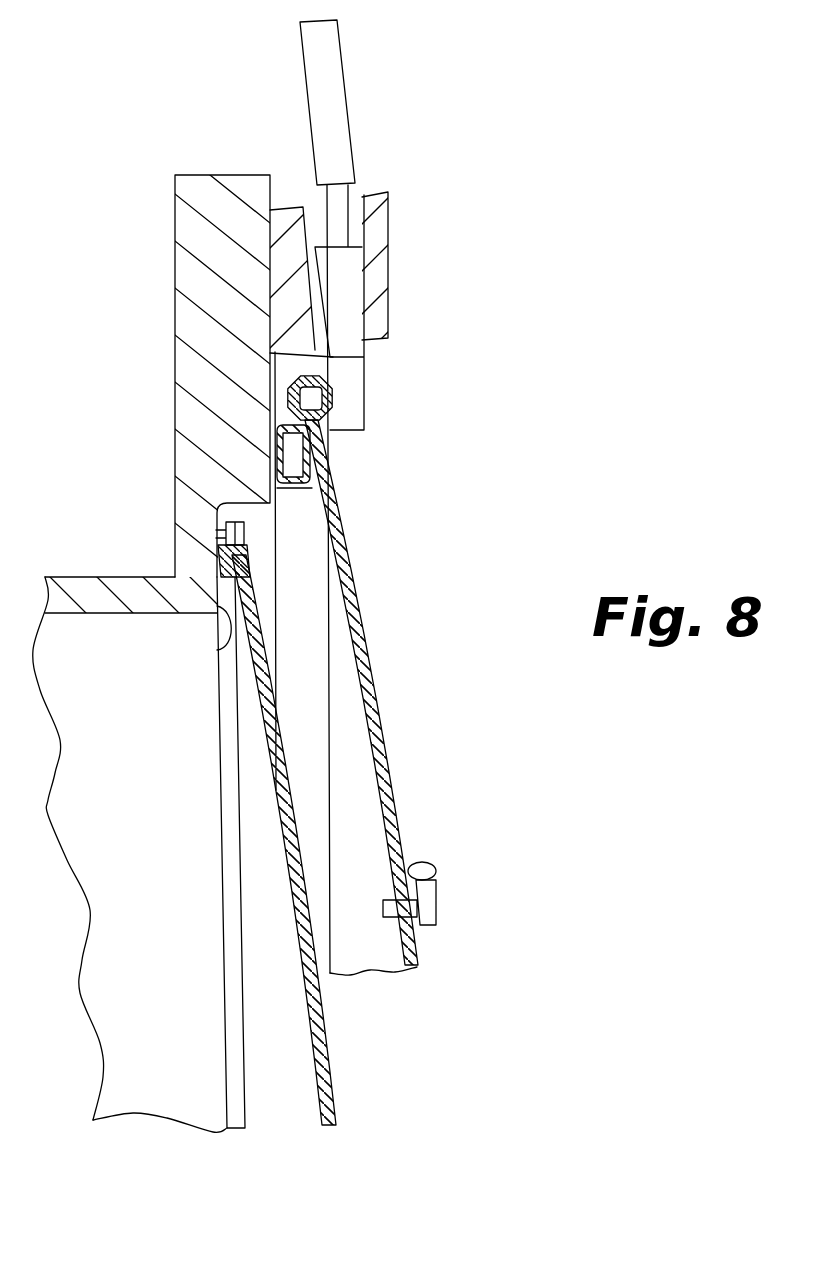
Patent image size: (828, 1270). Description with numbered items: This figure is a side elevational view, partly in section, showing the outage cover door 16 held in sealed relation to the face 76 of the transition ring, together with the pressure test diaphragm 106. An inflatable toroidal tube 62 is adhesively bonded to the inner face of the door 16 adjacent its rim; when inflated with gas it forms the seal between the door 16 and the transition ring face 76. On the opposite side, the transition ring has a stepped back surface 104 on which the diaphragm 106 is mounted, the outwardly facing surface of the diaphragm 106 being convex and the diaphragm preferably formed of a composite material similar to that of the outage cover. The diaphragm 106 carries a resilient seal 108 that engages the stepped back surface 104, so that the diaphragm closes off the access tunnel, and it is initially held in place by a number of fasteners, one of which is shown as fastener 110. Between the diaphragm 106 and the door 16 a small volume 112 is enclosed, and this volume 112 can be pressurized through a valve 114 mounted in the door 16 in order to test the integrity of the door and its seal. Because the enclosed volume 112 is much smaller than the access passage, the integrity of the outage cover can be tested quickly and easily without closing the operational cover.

The face of the transition ring 76 is at (277, 366).
The door 16 is at (387, 750).
The inflatable toroidal tube 62 is at (313, 665).
The small volume 112 is at (355, 818).
The valve 114 is at (440, 897).
The fastener 110 is at (243, 540).
The resilient seal 108 is at (240, 580).
The stepped back surface 104 is at (222, 650).
The diaphragm 106 is at (327, 1042).